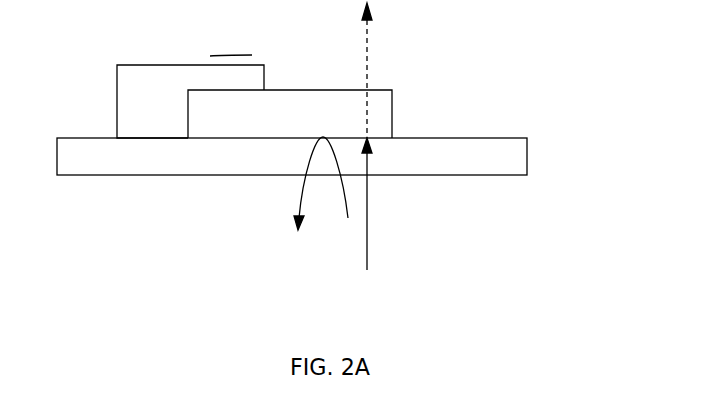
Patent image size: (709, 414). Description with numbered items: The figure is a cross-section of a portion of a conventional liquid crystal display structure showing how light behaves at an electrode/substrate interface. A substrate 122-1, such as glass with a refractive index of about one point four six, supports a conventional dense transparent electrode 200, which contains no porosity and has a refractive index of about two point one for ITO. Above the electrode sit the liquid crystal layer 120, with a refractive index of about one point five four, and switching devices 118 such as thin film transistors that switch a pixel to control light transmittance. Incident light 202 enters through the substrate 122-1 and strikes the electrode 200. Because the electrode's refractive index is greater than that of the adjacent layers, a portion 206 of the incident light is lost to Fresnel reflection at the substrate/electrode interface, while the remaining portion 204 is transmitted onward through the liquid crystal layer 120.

The liquid crystal layer 120 is at (357, 87).
The switching devices 118 is at (172, 101).
The conventional transparent electrode 200 is at (393, 112).
The substrate 122-1 is at (507, 160).
The remaining portion of light 204 is at (368, 58).
The incident light 202 is at (368, 250).
The Fresnel reflection losses 206 is at (298, 206).